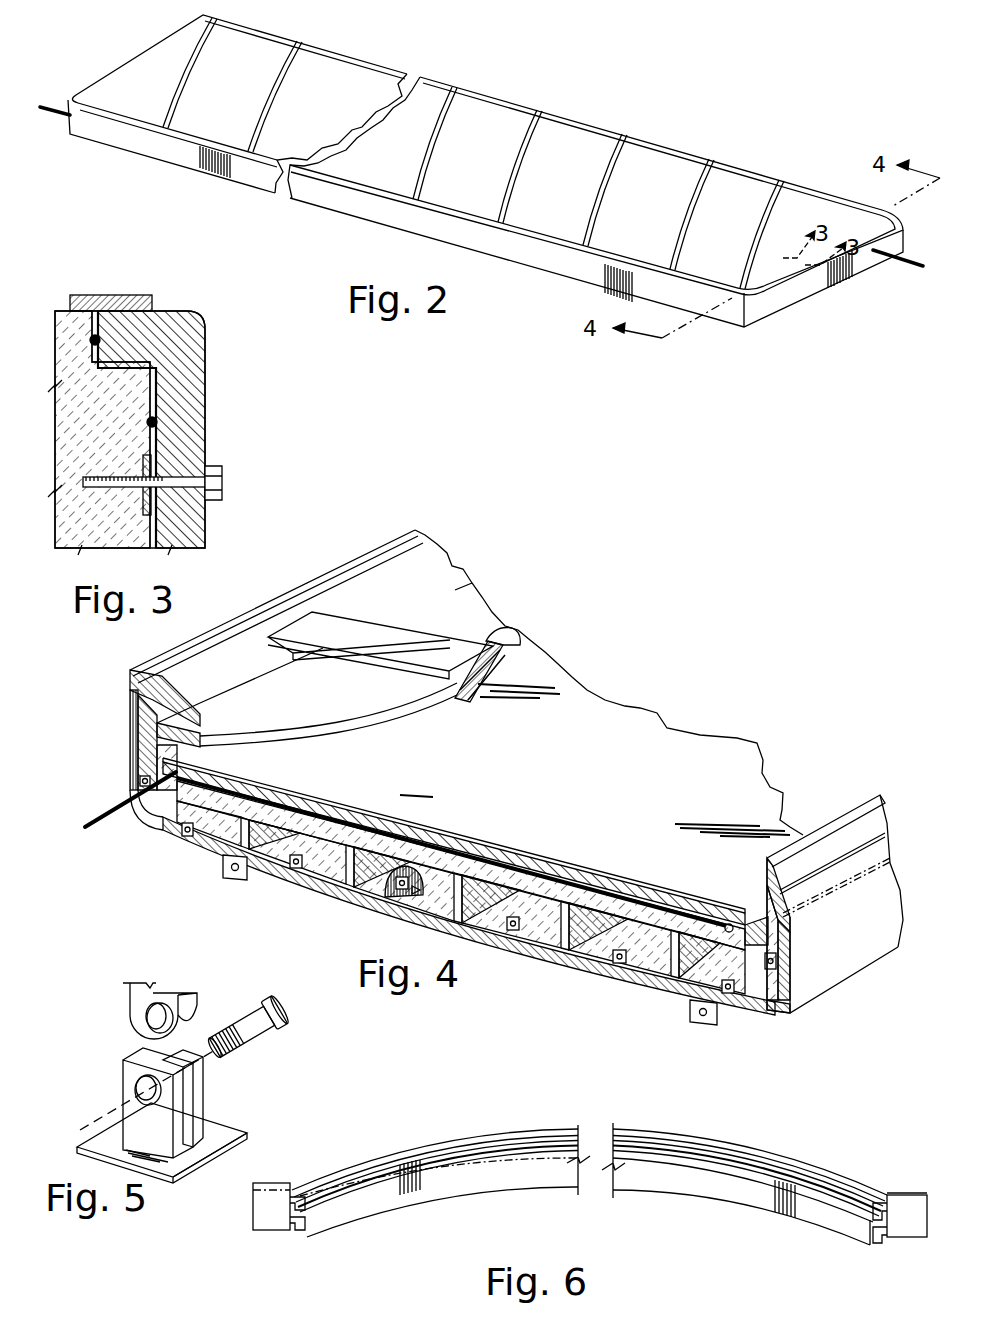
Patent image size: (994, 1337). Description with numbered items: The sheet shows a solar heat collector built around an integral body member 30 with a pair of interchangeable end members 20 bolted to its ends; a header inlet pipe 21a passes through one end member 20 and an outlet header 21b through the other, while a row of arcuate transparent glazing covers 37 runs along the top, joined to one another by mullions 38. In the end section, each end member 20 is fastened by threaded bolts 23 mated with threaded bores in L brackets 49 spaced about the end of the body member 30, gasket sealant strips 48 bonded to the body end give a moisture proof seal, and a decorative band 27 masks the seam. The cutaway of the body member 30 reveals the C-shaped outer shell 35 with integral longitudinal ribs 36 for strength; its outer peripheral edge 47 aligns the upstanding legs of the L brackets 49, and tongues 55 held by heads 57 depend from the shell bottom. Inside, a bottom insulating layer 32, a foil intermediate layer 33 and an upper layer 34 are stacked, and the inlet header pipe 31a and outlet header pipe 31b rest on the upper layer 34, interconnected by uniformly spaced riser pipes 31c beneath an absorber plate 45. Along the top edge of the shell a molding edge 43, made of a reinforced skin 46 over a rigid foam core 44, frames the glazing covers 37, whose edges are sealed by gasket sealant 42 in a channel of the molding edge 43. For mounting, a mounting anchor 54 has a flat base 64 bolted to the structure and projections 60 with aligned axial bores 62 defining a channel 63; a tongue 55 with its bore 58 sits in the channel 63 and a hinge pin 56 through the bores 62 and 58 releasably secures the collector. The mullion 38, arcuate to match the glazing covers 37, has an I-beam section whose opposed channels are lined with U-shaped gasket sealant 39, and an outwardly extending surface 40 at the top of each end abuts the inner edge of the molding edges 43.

In FIG. 2, the end member 20 is at (156, 38).
In FIG. 3, the end member 20 is at (206, 362).
In FIG. 2, the header inlet pipe 21a is at (45, 115).
In FIG. 2, the outlet header 21b is at (890, 265).
In FIG. 3, the threaded bolt 23 is at (222, 484).
In FIG. 3, the decorative band 27 is at (153, 295).
In FIG. 2, the integral body member 30 is at (338, 211).
In FIG. 3, the integral body member 30 is at (47, 313).
In FIG. 4, the integral body member 30 is at (828, 975).
In FIG. 4, the inlet header pipe 31a is at (102, 808).
In FIG. 4, the outlet header pipe 31b is at (728, 922).
In FIG. 4, the riser pipe 31c is at (612, 887).
In FIG. 4, the bottom insulating layer 32 is at (537, 927).
In FIG. 4, the intermediate layer 33 is at (548, 952).
In FIG. 4, the upper layer 34 is at (613, 928).
In FIG. 4, the outer shell 35 is at (158, 835).
In FIG. 4, the rib 36 is at (335, 885).
In FIG. 2, the transparent glazing cover 37 is at (325, 62).
In FIG. 4, the transparent glazing cover 37 is at (483, 617).
In FIG. 2, the mullion 38 is at (490, 127).
In FIG. 4, the mullion 38 is at (500, 640).
In FIG. 6, the mullion 38 is at (505, 1130).
In FIG. 4, the gasket sealant 39 is at (500, 672).
In FIG. 6, the gasket sealant 39 is at (303, 1226).
In FIG. 4, the outwardly extending surface 40 is at (315, 630).
In FIG. 6, the outwardly extending surface 40 is at (255, 1222).
In FIG. 4, the gasket sealant 42 is at (203, 716).
In FIG. 4, the molding edge 43 is at (427, 565).
In FIG. 4, the foam core 44 is at (130, 690).
In FIG. 4, the absorber plate 45 is at (507, 853).
In FIG. 4, the reinforced skin 46 is at (130, 740).
In FIG. 4, the outer peripheral edge 47 is at (302, 888).
In FIG. 3, the gasket sealant strip 48 is at (90, 340).
In FIG. 3, the L bracket 49 is at (168, 506).
In FIG. 4, the L bracket 49 is at (400, 898).
In FIG. 5, the mounting anchor 54 is at (224, 1152).
In FIG. 4, the tongue 55 is at (230, 880).
In FIG. 5, the tongue 55 is at (177, 993).
In FIG. 5, the hinge pin 56 is at (205, 1062).
In FIG. 4, the head 57 is at (213, 850).
In FIG. 5, the bore 58 is at (148, 1020).
In FIG. 5, the projection 60 is at (125, 1068).
In FIG. 5, the axial bore 62 is at (140, 1093).
In FIG. 5, the channel 63 is at (187, 1100).
In FIG. 5, the base 64 is at (218, 1125).